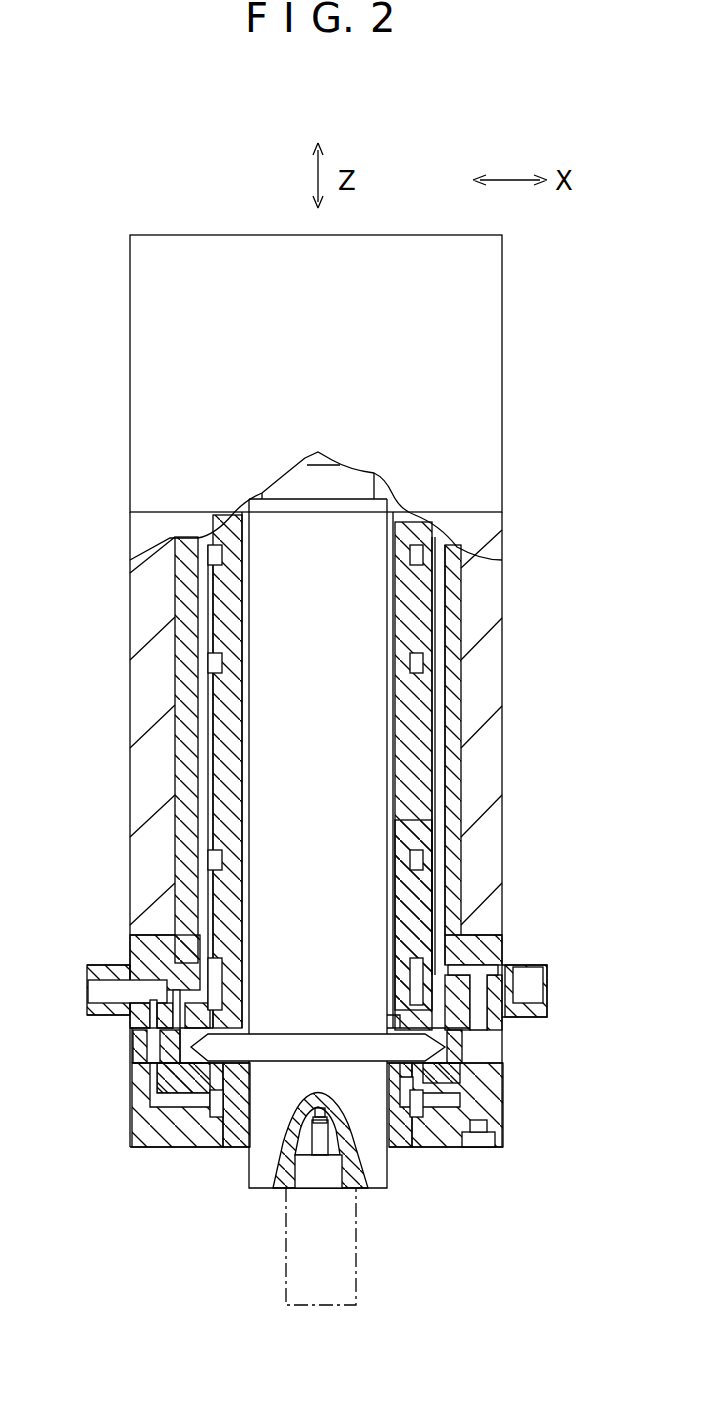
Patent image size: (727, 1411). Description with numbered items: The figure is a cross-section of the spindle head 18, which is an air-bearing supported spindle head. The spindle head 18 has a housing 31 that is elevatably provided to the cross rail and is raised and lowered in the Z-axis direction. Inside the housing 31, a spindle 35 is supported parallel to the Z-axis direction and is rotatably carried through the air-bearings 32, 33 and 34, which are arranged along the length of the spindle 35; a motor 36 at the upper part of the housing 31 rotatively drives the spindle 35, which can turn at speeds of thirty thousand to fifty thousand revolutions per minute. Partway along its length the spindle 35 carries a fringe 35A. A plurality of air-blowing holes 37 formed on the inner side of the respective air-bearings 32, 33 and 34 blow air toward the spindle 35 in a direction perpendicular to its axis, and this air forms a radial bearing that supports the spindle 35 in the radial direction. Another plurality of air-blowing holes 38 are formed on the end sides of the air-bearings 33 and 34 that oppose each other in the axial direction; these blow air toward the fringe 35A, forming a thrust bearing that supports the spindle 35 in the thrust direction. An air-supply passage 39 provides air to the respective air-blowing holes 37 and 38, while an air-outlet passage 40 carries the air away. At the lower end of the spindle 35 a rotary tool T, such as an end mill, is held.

The spindle head 18 is at (130, 369).
The motor 36 is at (502, 375).
The housing 31 is at (495, 785).
The air-bearing 32 is at (400, 637).
The air-bearing 33 is at (400, 883).
The air-bearing 34 is at (458, 1083).
The spindle 35 is at (263, 1163).
The fringe 35A is at (320, 1040).
The air-blowing holes 37 is at (408, 556).
The air-blowing holes 38 is at (185, 1045).
The air-supply passage 39 is at (207, 778).
The air-outlet passage 40 is at (438, 808).
The rotary tool T is at (357, 1252).